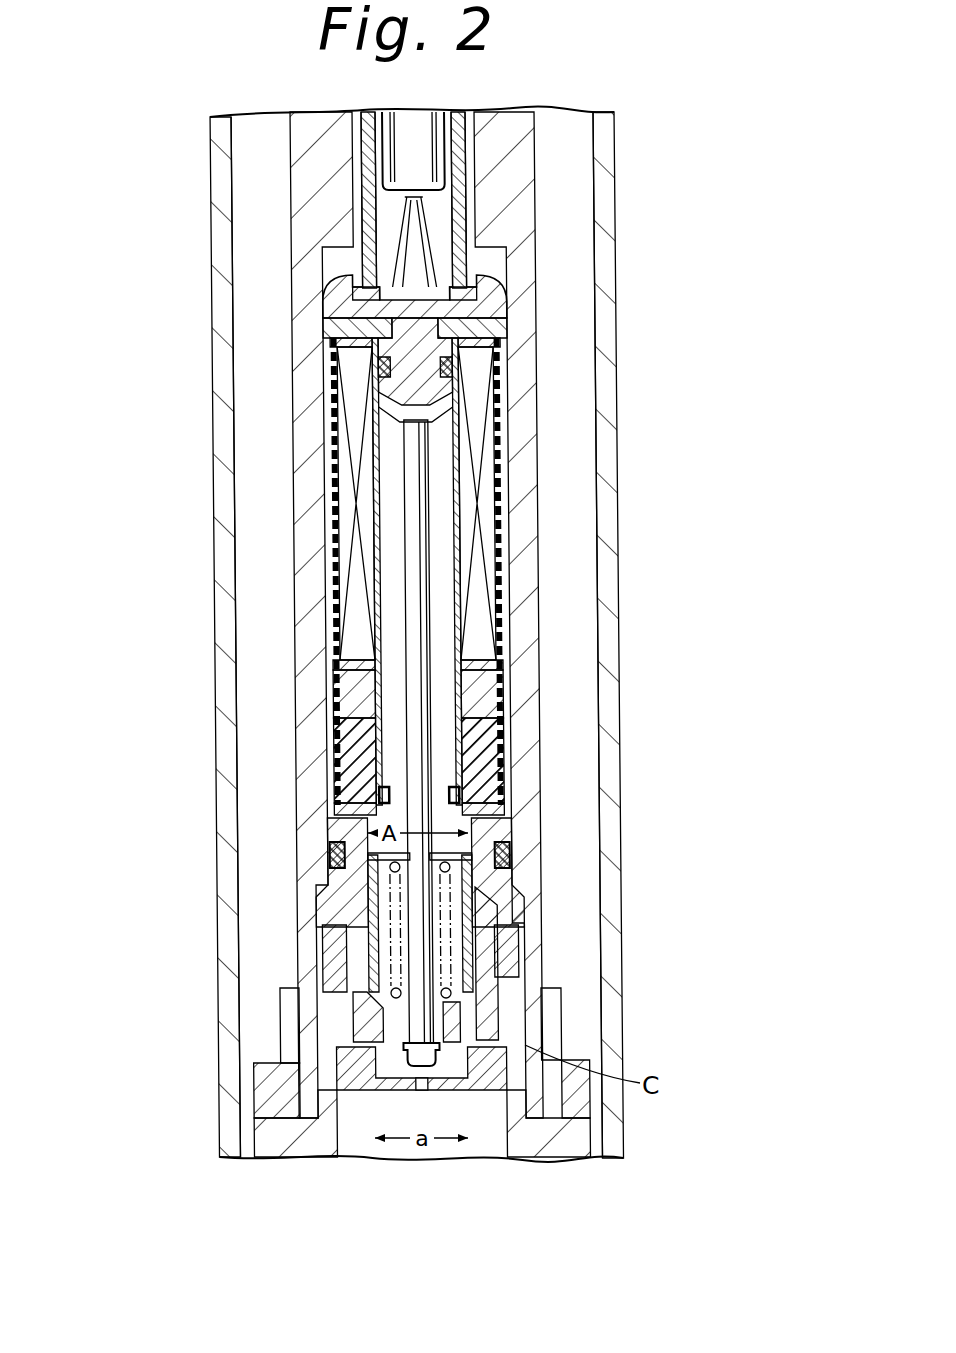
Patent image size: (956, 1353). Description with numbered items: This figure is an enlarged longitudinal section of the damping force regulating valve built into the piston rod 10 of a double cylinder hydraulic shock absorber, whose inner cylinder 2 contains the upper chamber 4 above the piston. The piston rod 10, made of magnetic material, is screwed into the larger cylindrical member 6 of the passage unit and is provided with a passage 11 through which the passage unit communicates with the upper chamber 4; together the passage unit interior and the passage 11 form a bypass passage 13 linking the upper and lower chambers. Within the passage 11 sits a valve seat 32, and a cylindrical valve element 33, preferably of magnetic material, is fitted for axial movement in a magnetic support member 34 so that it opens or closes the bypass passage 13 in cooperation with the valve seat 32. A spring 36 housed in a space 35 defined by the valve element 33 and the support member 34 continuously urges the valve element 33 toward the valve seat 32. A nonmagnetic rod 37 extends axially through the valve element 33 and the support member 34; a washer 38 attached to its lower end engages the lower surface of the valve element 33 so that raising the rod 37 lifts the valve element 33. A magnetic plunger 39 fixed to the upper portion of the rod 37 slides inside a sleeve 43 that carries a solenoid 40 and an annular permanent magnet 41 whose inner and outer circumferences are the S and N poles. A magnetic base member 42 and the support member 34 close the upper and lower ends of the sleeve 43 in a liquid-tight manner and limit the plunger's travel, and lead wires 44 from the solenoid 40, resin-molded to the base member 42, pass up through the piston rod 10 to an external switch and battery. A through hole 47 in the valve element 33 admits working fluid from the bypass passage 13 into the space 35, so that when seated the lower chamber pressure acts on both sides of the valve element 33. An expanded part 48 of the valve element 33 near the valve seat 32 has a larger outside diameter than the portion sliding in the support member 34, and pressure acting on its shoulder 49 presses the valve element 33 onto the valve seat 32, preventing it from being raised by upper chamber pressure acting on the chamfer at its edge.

The inner cylinder 2 is at (607, 373).
The upper chamber 4 is at (578, 627).
The larger cylindrical member 6 is at (580, 1145).
The piston rod 10 is at (525, 187).
The passage 11 is at (340, 1030).
The bypass passage 13 is at (443, 1082).
The valve seat 32 is at (375, 1055).
The valve element 33 is at (477, 953).
The support member 34 is at (323, 902).
The space 35 is at (510, 853).
The spring 36 is at (462, 885).
The rod 37 is at (417, 745).
The washer 38 is at (407, 1063).
The plunger 39 is at (385, 617).
The solenoid 40 is at (333, 503).
The annular permanent magnet 41 is at (350, 694).
The base member 42 is at (393, 383).
The sleeve 43 is at (462, 502).
The lead wires 44 is at (397, 263).
The through hole 47 is at (383, 1008).
The expanded part 48 is at (473, 1050).
The shoulder 49 is at (482, 1012).